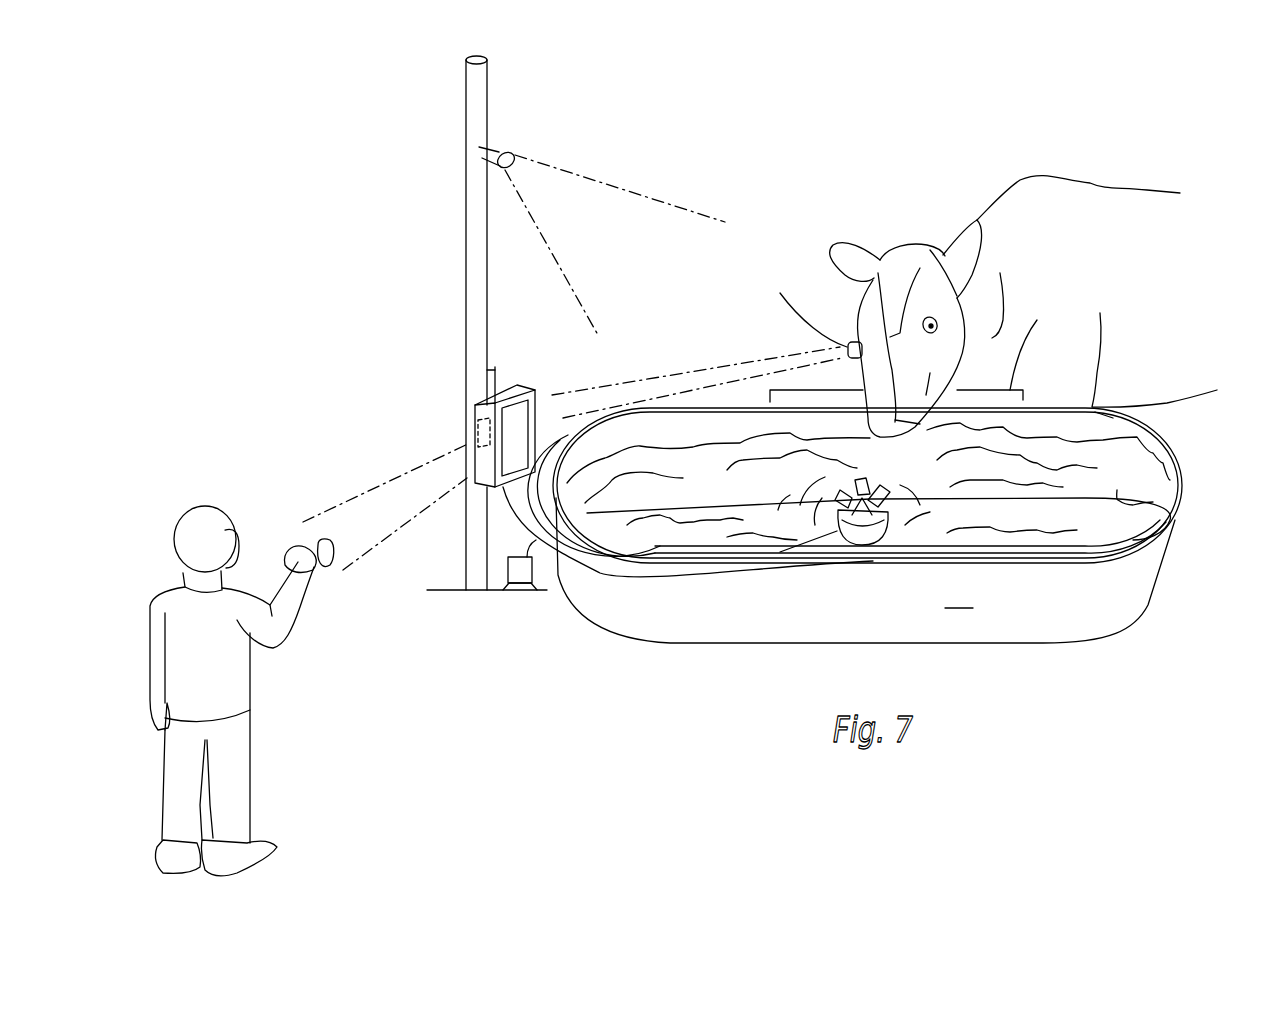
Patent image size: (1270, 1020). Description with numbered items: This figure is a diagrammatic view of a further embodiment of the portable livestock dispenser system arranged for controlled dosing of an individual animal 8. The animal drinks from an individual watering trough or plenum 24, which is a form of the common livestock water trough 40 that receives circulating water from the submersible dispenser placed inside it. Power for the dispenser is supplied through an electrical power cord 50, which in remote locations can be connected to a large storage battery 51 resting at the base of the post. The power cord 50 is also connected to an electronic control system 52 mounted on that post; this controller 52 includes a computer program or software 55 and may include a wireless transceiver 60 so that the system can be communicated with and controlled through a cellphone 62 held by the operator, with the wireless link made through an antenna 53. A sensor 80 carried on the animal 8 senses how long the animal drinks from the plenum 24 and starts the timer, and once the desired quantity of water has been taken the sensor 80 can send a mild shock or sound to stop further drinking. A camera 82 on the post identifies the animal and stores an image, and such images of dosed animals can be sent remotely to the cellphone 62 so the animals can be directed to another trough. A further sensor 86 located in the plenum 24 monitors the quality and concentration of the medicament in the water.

The animal (cow) 8 is at (884, 307).
The individual animal plenum 24 is at (1170, 582).
The livestock water trough 40 is at (893, 516).
The electrical power cord 50 is at (623, 583).
The storage battery 51 is at (517, 575).
The electronic control system 52 is at (517, 385).
The antenna 53 is at (493, 370).
The computer program or software 55 is at (480, 428).
The wireless transceiver 60 is at (468, 395).
The cellphone 62 is at (325, 540).
The sensor 80 is at (845, 345).
The camera 82 is at (511, 150).
The sensor 86 is at (697, 455).